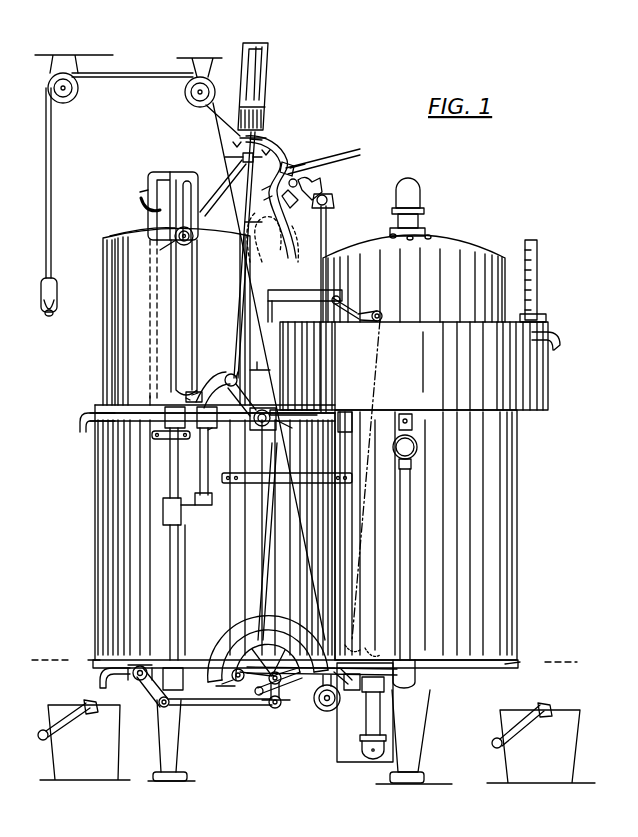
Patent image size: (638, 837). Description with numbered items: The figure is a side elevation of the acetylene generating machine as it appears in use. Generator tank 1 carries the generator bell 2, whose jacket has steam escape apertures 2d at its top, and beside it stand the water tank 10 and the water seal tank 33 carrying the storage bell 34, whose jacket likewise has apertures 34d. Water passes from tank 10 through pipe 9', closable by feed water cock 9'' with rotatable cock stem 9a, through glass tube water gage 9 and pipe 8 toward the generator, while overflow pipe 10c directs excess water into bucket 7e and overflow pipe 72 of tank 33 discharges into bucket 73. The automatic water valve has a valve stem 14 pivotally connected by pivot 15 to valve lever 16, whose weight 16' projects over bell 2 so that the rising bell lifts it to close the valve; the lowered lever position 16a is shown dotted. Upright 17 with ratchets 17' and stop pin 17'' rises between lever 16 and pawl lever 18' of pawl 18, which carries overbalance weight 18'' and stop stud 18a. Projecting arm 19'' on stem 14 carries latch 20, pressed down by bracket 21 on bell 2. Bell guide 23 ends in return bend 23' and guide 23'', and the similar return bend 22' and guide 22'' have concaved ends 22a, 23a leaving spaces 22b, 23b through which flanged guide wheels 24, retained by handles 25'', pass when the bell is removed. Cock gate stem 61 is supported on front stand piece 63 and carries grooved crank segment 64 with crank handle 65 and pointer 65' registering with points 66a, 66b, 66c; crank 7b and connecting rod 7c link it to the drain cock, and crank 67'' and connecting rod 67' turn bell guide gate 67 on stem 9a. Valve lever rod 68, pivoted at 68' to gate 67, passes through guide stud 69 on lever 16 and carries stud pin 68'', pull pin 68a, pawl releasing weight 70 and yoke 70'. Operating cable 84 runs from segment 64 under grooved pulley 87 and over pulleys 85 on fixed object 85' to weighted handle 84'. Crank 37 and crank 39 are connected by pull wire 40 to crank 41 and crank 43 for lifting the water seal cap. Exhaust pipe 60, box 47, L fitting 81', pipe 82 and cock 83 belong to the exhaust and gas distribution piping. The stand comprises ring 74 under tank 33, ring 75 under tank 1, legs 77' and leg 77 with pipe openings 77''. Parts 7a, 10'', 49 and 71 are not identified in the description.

The tank 1 is at (95, 505).
The generator bell 2 is at (110, 355).
The apertures 2d is at (135, 236).
The valve pivot 7a is at (140, 682).
The crank 7b is at (150, 690).
The connecting rod 7c is at (193, 706).
The bucket 7e is at (80, 700).
The pipe 8 is at (168, 586).
The glass tube water gage 9 is at (184, 466).
The pipe 9' is at (214, 428).
The feed water cock 9'' is at (289, 430).
The cock stem 9a is at (262, 408).
The tank 10 is at (423, 368).
The gauge 10'' is at (546, 281).
The overflow pipe 10c is at (80, 415).
The valve stem 14 is at (300, 178).
The pivot 15 is at (334, 200).
The valve lever 16 is at (221, 188).
The weight 16' is at (134, 196).
The dotted lines 16a is at (272, 262).
The upright 17 is at (331, 161).
The ratchets 17' is at (263, 200).
The stop pin 17'' is at (329, 154).
The pawl 18 is at (289, 194).
The pawl lever 18' is at (271, 190).
The overbalance weight 18'' is at (327, 188).
The stop stud 18a is at (294, 166).
The projecting arm 19'' is at (318, 299).
The latch 20 is at (259, 360).
The bracket 21 is at (247, 180).
The return bend 22' is at (173, 203).
The guide 22'' is at (136, 181).
The concaved end 22a is at (193, 393).
The space 22b is at (153, 397).
The bell guide 23 is at (156, 320).
The return bend 23' is at (185, 203).
The guide 23'' is at (198, 317).
The concaved end 23a is at (190, 394).
The space 23b is at (187, 398).
The flanged guide wheels 24 is at (192, 240).
The handles 25'' is at (154, 255).
The water seal tank 33 is at (518, 440).
The storage bell 34 is at (488, 250).
The apertures 34d is at (432, 235).
The crank 37 is at (379, 642).
The crank 39 is at (357, 640).
The pull wire 40 is at (362, 530).
The crank 41 is at (382, 313).
The crank 43 is at (358, 310).
The box 47 is at (376, 762).
The pipe 49 is at (368, 700).
The vertical exhaust pipe 60 is at (425, 208).
The stem 61 is at (280, 684).
The stand piece 63 is at (256, 696).
The grooved crank segment 64 is at (300, 680).
The crank handle 65 is at (229, 696).
The pointer 65' is at (214, 711).
The point 66a is at (217, 688).
The point 66b is at (270, 616).
The index point 66c is at (352, 692).
The bell guide gate 67 is at (226, 381).
The connecting rod 67' is at (279, 541).
The crank 67'' is at (271, 730).
The valve lever rod 68 is at (266, 234).
The pivot 68' is at (223, 355).
The stud pin 68'' is at (262, 188).
The pull pin 68a is at (268, 52).
The guide stud 69 is at (272, 143).
The pawl releasing weight 70 is at (272, 117).
The yoke 70' is at (279, 73).
The pipe 71 is at (186, 655).
The overflow pipe 72 is at (562, 348).
The bucket 73 is at (556, 710).
The ring 74 is at (274, 708).
The ring 75 is at (57, 660).
The leg 77 is at (416, 777).
The legs 77' is at (161, 740).
The openings 77'' is at (309, 720).
The L fitting 81' is at (421, 661).
The pipe 82 is at (411, 493).
The cock 83 is at (417, 447).
The operating cable 84 is at (61, 183).
The handle 84' is at (63, 297).
The pulleys 85 is at (131, 90).
The fixed object 85' is at (128, 58).
The grooved pulley 87 is at (328, 712).